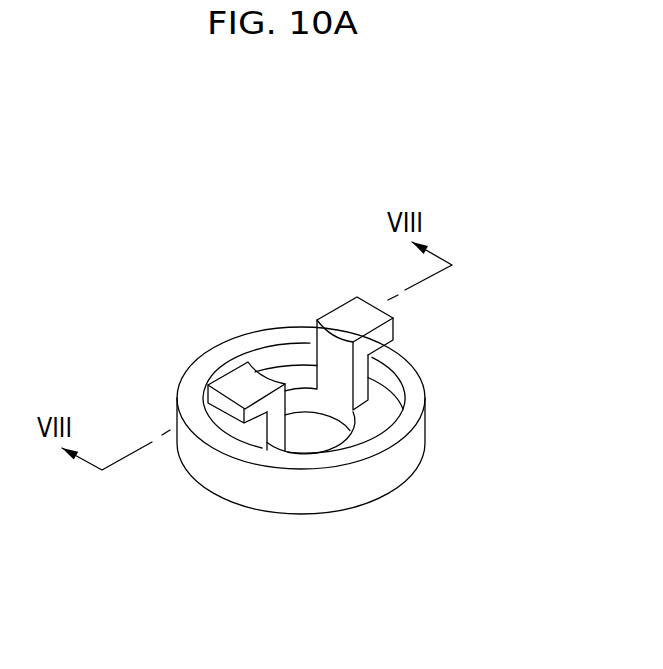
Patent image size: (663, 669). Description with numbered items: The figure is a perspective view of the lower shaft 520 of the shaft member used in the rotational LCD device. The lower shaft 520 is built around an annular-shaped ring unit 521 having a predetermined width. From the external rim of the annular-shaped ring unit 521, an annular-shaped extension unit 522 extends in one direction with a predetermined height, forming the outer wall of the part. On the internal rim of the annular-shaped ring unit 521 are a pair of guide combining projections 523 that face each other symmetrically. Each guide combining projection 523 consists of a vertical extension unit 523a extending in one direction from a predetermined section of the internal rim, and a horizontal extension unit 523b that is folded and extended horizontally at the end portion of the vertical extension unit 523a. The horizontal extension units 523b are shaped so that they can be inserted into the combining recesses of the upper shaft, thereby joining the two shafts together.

The lower shaft 520 is at (487, 255).
The annular-shaped ring unit 521 is at (373, 420).
The annular-shaped extension unit 522 is at (415, 397).
The guide combining projection 523 is at (212, 213).
The vertical extension unit 523a is at (325, 340).
The horizontal extension unit 523b is at (352, 313).